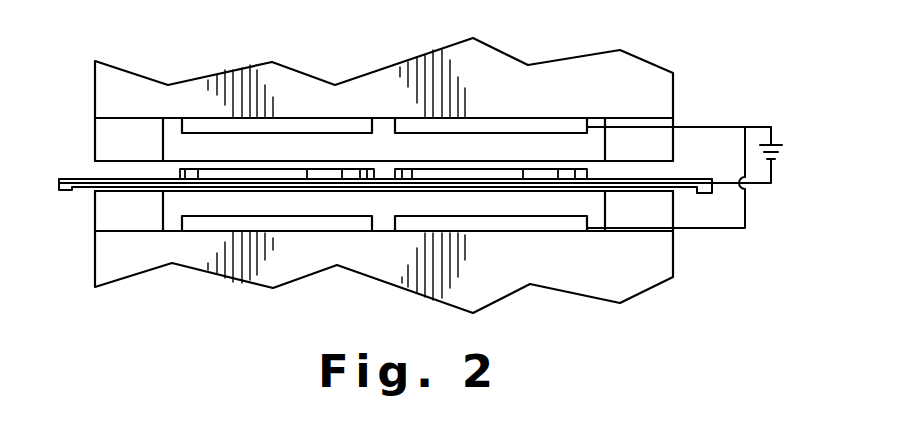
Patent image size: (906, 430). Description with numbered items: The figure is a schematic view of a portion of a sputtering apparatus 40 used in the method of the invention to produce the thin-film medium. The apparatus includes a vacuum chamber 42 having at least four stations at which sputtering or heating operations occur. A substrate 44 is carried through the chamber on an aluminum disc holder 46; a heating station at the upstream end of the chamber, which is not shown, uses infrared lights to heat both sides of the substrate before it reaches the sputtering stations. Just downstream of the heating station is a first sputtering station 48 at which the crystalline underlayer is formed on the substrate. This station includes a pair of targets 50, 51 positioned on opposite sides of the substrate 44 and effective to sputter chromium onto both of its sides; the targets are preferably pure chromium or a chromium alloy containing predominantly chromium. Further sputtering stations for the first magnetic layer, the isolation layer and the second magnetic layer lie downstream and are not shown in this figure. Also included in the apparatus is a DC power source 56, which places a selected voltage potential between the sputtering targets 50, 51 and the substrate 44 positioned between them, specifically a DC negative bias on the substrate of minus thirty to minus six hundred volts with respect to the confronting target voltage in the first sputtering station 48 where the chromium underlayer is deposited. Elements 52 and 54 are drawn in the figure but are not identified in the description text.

The sputtering apparatus 40 is at (300, 60).
The vacuum chamber 42 is at (70, 150).
The substrate 44 is at (437, 175).
The aluminum disc holder 46 is at (88, 188).
The first sputtering station 48 is at (475, 215).
The target 50 is at (538, 225).
The target 51 is at (497, 128).
The lower chamber wall region 52 is at (322, 215).
The lower left electrode 54 is at (348, 223).
The DC power source 56 is at (770, 146).